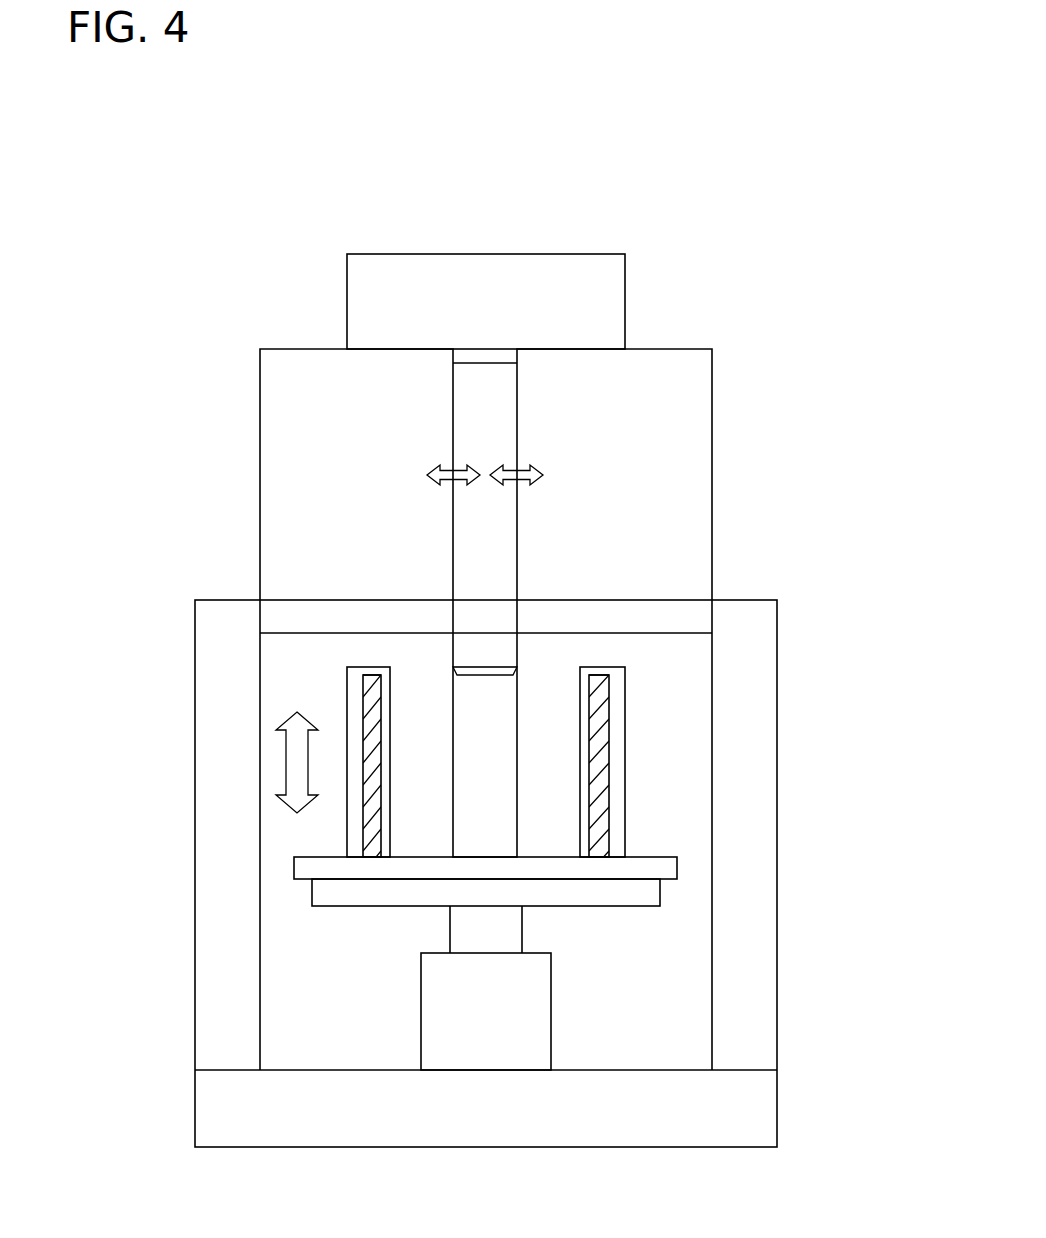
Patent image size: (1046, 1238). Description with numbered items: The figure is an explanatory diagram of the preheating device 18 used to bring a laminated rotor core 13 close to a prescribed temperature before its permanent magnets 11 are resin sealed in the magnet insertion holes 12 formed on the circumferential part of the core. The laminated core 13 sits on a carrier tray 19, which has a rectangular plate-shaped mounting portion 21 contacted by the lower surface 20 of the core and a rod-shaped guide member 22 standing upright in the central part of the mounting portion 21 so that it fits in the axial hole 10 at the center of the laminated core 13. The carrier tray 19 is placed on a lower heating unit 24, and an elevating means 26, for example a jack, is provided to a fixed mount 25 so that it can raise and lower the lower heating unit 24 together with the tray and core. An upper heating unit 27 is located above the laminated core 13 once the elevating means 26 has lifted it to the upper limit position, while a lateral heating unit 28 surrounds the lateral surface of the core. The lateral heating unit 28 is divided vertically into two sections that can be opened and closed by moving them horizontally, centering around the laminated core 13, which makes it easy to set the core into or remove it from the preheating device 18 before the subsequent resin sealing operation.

The axial hole 10 is at (515, 713).
The permanent magnet 11 is at (365, 717).
The magnet insertion hole 12 is at (367, 665).
The laminated rotor core 13 is at (628, 730).
The preheating device 18 is at (547, 602).
The carrier tray 19 is at (690, 1008).
The lower surface 20 is at (615, 857).
The mounting portion 21 is at (498, 868).
The guide member 22 is at (520, 818).
The lower heating unit 24 is at (312, 893).
The fixed mount 25 is at (778, 1108).
The elevating means 26 is at (420, 1010).
The upper heating unit 27 is at (528, 247).
The lateral heating unit 28 is at (718, 370).